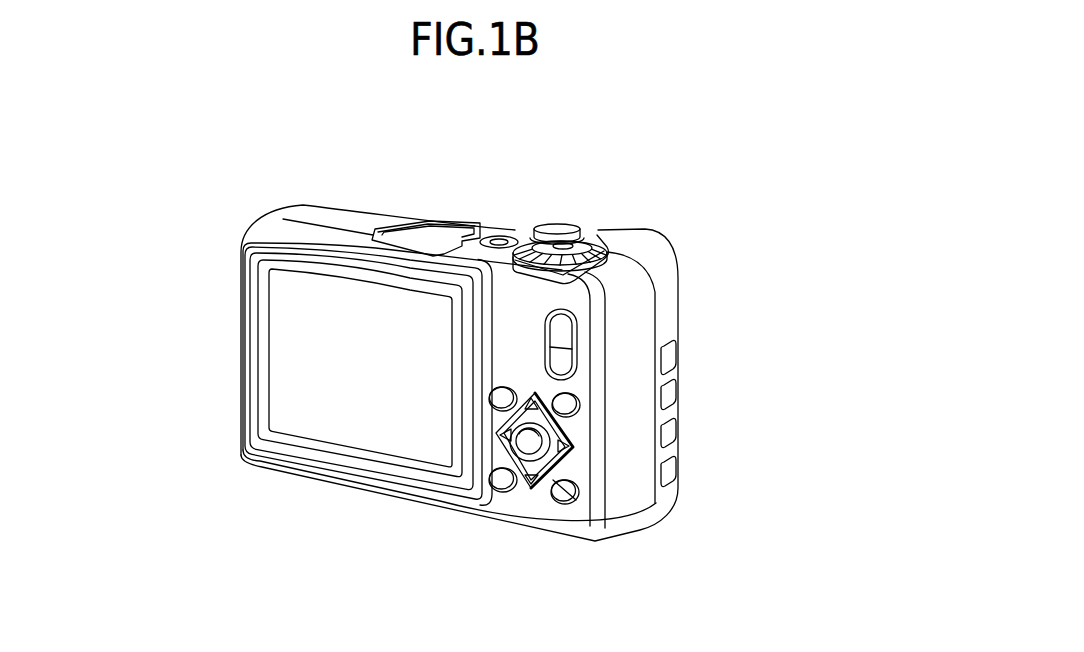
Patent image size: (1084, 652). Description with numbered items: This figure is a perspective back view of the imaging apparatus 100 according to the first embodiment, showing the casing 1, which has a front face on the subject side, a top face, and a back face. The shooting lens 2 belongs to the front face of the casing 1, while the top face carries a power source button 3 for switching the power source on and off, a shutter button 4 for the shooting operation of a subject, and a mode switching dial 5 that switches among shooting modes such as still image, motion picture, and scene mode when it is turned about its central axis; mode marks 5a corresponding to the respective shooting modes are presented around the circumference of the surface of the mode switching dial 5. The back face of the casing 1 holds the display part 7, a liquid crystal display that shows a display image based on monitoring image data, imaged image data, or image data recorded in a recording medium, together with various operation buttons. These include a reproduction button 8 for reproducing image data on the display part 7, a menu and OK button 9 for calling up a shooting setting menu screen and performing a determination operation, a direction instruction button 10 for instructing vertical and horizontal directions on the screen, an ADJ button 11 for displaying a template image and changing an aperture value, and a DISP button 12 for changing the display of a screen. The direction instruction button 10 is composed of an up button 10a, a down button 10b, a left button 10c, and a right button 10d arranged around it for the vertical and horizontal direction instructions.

The imaging apparatus 100 is at (692, 190).
The casing 1 is at (679, 319).
The shooting lens 2 is at (322, 237).
The power source button 3 is at (499, 237).
The shutter button 4 is at (557, 226).
The mode switching dial 5 is at (578, 228).
The mode marks 5a is at (585, 233).
The display part 7 is at (320, 347).
The reproduction button 8 is at (550, 393).
The menu and OK button 9 is at (510, 486).
The direction instruction button 10 is at (573, 437).
The up button 10a is at (575, 369).
The down button 10b is at (530, 493).
The left button 10c is at (498, 434).
The right button 10d is at (578, 501).
The ADJ button 11 is at (508, 403).
The DISP button 12 is at (562, 504).